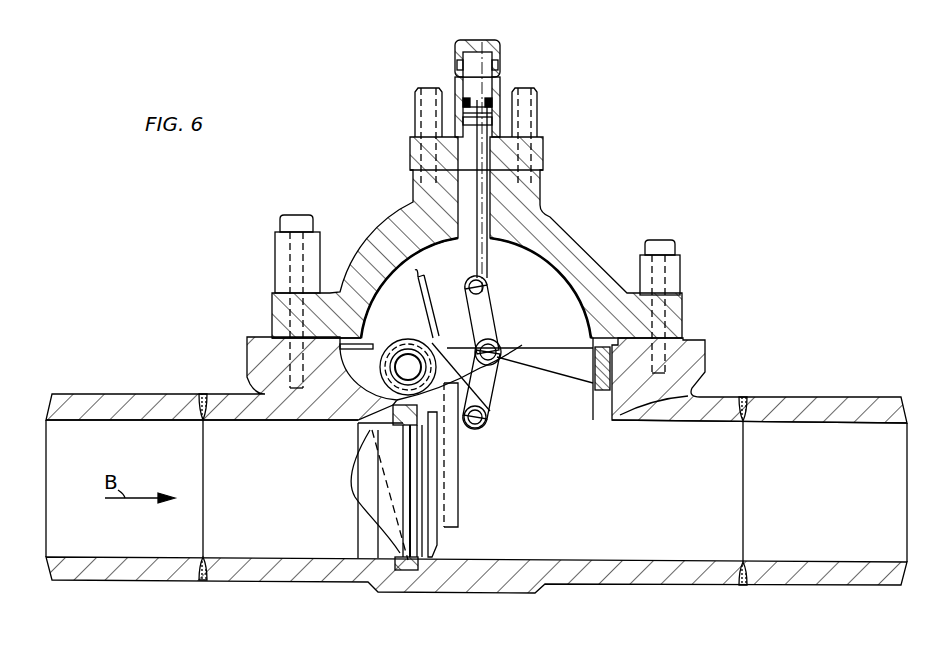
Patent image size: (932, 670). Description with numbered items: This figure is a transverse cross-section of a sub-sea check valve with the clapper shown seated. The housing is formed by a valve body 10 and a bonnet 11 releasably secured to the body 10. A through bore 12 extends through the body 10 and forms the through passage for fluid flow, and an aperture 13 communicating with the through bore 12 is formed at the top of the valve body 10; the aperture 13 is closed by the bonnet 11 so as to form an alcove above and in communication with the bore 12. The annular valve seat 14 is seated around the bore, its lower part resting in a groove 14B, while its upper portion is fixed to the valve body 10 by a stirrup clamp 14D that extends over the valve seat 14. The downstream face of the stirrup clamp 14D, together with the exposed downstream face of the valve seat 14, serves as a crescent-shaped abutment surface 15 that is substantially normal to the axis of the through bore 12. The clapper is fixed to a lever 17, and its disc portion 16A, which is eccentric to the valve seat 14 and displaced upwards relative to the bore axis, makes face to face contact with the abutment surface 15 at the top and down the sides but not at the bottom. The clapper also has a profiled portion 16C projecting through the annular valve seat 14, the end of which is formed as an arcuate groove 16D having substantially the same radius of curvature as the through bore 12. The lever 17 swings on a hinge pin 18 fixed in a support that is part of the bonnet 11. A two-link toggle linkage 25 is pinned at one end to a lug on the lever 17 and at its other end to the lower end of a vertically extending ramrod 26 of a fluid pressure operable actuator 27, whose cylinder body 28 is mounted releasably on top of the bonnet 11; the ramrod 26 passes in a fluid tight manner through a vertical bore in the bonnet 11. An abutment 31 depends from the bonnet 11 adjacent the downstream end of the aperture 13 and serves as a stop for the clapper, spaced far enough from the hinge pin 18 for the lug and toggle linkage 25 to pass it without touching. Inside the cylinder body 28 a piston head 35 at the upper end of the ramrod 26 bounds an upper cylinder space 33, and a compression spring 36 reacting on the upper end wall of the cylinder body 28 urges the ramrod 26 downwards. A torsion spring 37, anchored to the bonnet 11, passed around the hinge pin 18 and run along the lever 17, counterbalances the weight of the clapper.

The valve body 10 is at (604, 572).
The bonnet 11 is at (585, 262).
The through bore 12 is at (697, 568).
The aperture 13 is at (690, 398).
The valve seat 14 is at (390, 567).
The groove 14B is at (410, 568).
The stirrup clamp 14D is at (522, 346).
The abutment surface 15 is at (393, 411).
The disc portion 16A is at (428, 537).
The profiled portion 16C is at (367, 507).
The arcuate groove 16D is at (383, 482).
The lever 17 is at (453, 486).
The hinge pin 18 is at (408, 360).
The two-link toggle linkage 25 is at (485, 388).
The ramrod 26 is at (477, 203).
The fluid pressure operable actuator 27 is at (505, 62).
The cylinder body 28 is at (457, 64).
The abutment 31 is at (600, 380).
The upper cylinder space 33 is at (463, 103).
The piston head 35 is at (483, 117).
The compression spring 36 is at (532, 93).
The torsion spring 37 is at (428, 345).